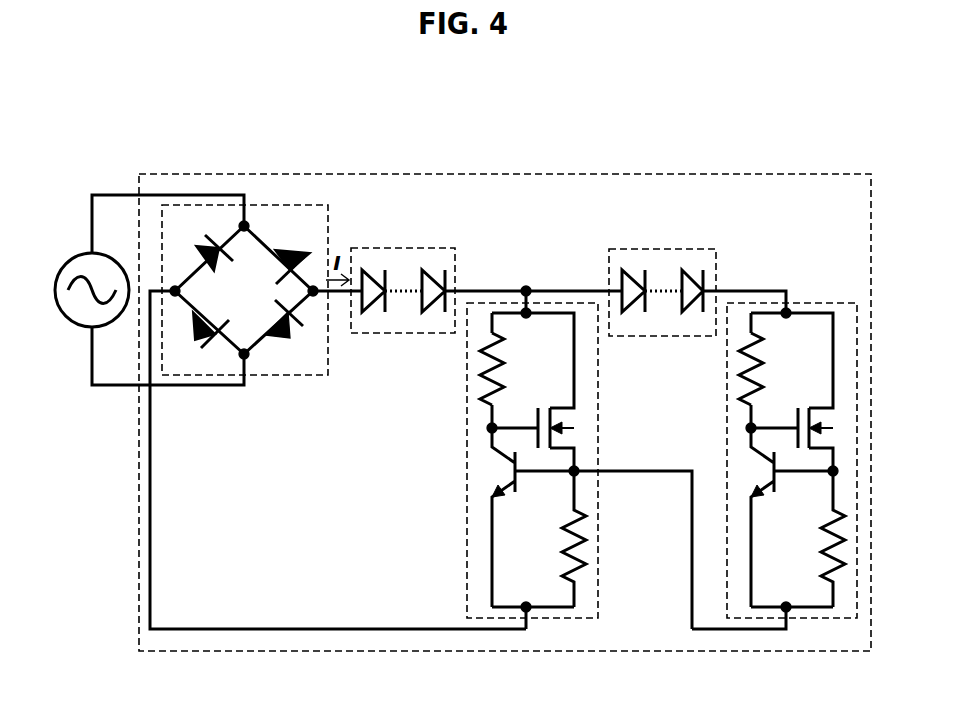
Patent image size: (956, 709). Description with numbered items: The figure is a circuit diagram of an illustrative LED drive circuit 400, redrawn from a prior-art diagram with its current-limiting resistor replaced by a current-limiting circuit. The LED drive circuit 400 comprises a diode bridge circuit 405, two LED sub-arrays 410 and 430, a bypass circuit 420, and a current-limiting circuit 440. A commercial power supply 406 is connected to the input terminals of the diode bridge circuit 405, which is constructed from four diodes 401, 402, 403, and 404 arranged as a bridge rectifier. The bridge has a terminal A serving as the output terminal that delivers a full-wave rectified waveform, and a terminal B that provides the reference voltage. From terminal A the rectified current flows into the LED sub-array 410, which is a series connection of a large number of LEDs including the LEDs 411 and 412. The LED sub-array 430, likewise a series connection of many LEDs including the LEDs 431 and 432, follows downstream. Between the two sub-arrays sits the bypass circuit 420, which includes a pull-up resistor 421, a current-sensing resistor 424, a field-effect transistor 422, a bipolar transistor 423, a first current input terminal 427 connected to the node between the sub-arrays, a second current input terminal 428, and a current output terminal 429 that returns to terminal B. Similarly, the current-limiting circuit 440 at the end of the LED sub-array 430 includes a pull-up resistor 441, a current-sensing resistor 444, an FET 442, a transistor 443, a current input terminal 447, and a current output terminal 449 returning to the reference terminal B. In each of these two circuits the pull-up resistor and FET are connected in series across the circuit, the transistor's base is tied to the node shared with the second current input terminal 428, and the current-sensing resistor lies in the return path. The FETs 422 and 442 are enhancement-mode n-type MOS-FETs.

The LED drive circuit 400 is at (852, 175).
The diode bridge circuit 405 is at (260, 271).
The diode 401 is at (200, 232).
The diode 402 is at (288, 240).
The diode 403 is at (205, 345).
The diode 404 is at (290, 345).
The commercial power supply 406 is at (80, 258).
The LED sub-array 410 is at (428, 204).
The LED 411 is at (372, 268).
The LED 412 is at (430, 268).
The bypass circuit 420 is at (527, 388).
The pull-up resistor 421 is at (480, 373).
The field-effect transistor 422 is at (570, 422).
The bipolar transistor 423 is at (502, 476).
The current-sensing resistor 424 is at (584, 564).
The first current input terminal 427 is at (532, 296).
The second current input terminal 428 is at (598, 474).
The current output terminal 429 is at (527, 612).
The LED sub-array 430 is at (686, 208).
The LED 431 is at (632, 268).
The LED 432 is at (692, 268).
The current-limiting circuit 440 is at (748, 409).
The pull-up resistor 441 is at (738, 350).
The FET 442 is at (797, 408).
The transistor 443 is at (762, 472).
The current-sensing resistor 444 is at (832, 538).
The current input terminal 447 is at (786, 310).
The current output terminal 449 is at (787, 612).
The terminal A is at (316, 286).
The terminal B is at (175, 282).